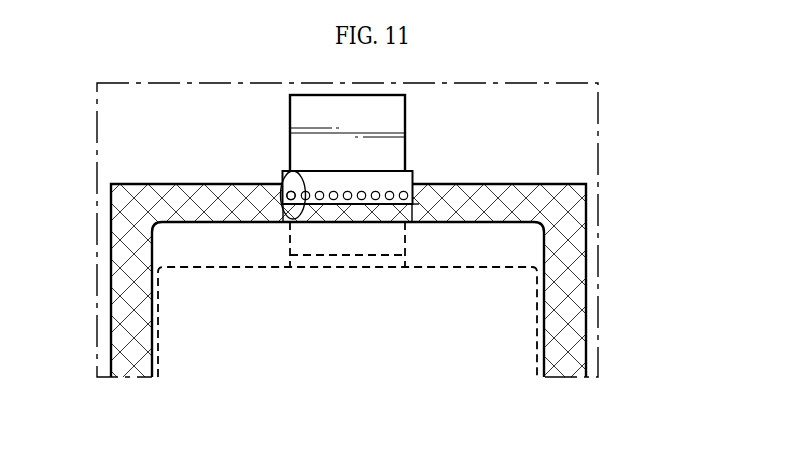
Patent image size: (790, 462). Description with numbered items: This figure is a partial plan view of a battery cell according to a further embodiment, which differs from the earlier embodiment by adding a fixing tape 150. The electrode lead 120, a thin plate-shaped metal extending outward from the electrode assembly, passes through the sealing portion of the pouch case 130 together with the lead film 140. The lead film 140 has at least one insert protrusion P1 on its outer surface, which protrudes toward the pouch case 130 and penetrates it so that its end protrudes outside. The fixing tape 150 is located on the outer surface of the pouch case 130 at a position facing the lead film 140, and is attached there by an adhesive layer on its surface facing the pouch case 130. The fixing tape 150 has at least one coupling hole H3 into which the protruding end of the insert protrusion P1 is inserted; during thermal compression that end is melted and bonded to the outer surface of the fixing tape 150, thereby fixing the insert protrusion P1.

The electrode lead 120 is at (405, 128).
The pouch case 130 is at (598, 207).
The lead film 140 is at (413, 174).
The fixing tape 150 is at (413, 204).
The insert protrusion P1 is at (298, 171).
The coupling hole H3 is at (282, 219).